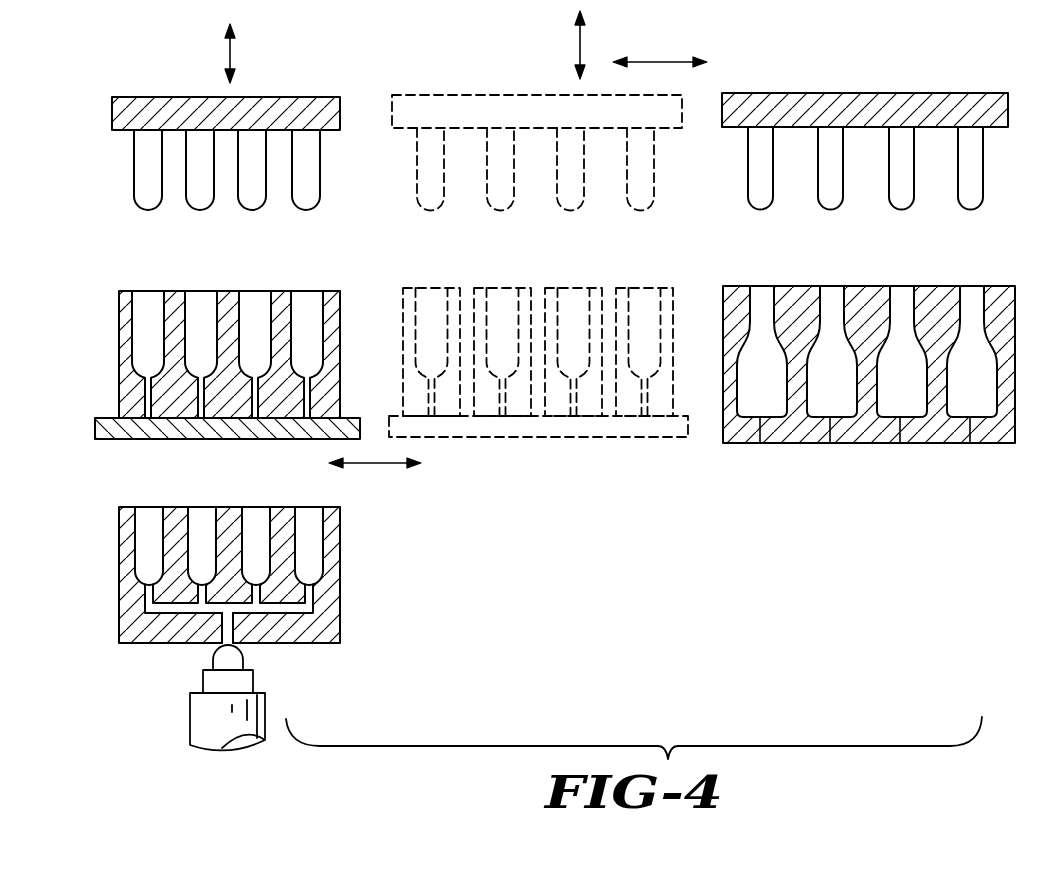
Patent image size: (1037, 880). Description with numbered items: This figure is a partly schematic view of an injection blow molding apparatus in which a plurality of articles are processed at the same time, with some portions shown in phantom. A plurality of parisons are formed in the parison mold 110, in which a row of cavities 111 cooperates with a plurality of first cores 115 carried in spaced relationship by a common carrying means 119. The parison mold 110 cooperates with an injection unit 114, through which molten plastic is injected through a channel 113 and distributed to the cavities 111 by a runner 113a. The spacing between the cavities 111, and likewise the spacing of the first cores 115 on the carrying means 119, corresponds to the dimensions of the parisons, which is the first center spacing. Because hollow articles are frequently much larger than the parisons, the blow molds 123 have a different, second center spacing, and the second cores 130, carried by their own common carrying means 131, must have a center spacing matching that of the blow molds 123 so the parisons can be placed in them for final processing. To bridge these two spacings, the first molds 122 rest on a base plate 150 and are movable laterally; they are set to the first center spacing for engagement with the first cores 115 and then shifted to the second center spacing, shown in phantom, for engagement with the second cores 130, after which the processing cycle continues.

The parison mold 110 is at (245, 588).
The cavities 111 is at (246, 518).
The channel 113 is at (222, 629).
The runner 113a is at (149, 631).
The injection unit 114 is at (195, 723).
The first cores 115 is at (244, 198).
The common carrying means 119 is at (293, 101).
The first molds 122 is at (118, 346).
The blow molds 123 is at (872, 433).
The second cores 130 is at (557, 189).
The common carrying means 131 is at (468, 97).
The base plate 150 is at (128, 441).